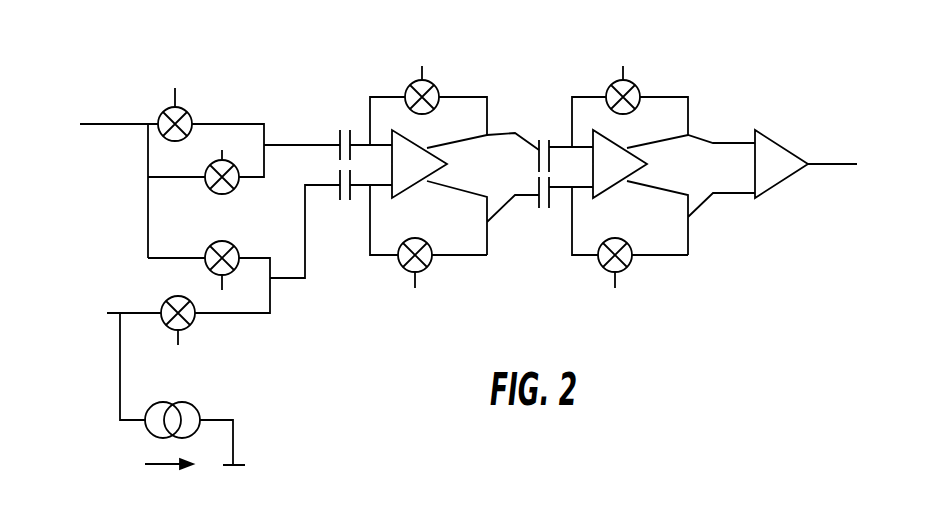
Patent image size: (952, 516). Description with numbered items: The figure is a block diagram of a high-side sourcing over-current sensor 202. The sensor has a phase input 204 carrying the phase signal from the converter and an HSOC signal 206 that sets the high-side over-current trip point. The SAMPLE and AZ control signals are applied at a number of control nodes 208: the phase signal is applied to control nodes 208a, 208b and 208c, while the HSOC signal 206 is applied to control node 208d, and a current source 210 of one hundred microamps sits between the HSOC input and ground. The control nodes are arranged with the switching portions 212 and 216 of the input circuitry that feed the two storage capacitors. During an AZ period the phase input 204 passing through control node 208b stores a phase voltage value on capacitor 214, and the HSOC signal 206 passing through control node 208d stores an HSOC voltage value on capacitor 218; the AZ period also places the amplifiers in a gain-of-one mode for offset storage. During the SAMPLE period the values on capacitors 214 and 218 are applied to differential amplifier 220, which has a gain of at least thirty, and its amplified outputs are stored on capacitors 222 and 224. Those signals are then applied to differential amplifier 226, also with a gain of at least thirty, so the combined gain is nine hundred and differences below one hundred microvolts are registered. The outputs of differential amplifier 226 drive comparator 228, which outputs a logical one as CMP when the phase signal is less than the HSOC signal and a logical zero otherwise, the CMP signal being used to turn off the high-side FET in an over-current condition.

The high-side sourcing over-current sensor 202 is at (822, 106).
The phase input 204 is at (100, 90).
The HSOC signal 206 is at (100, 280).
The control nodes 208 is at (435, 85).
The control node 208a is at (184, 108).
The control node 208b is at (217, 193).
The control node 208c is at (220, 242).
The control node 208d is at (193, 325).
The current source 210 is at (195, 418).
The sampling switch network 212 is at (297, 122).
The capacitor 214 is at (337, 153).
The sampling switch network 216 is at (277, 280).
The capacitor 218 is at (337, 193).
The differential amplifier 220 is at (448, 166).
The capacitor 222 is at (543, 132).
The capacitor 224 is at (533, 206).
The differential amplifier 226 is at (648, 166).
The comparator 228 is at (780, 183).